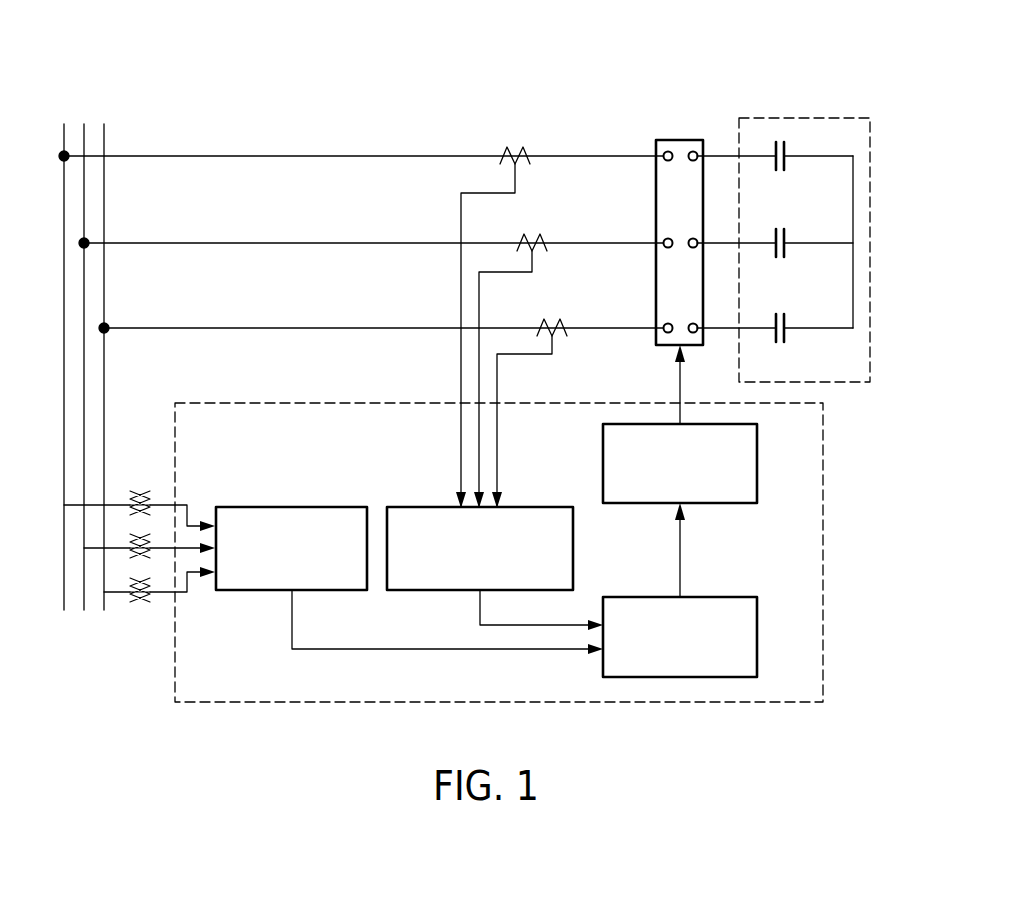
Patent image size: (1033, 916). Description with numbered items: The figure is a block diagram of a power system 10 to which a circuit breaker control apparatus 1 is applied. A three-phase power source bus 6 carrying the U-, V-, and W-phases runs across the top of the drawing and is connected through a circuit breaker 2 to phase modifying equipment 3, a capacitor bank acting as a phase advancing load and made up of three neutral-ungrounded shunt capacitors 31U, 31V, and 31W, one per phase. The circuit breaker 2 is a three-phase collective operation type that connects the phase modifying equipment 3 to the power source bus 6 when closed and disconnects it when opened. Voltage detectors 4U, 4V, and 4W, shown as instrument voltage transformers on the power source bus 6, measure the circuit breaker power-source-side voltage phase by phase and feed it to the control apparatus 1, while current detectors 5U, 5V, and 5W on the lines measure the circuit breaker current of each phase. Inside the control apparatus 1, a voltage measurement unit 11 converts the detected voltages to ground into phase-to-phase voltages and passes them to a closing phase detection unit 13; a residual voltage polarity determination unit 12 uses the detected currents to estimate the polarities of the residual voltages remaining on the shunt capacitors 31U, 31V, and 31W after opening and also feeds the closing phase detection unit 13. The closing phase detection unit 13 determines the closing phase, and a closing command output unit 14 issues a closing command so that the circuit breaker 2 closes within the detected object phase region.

The circuit breaker control apparatus 1 is at (824, 590).
The circuit breaker 2 is at (681, 139).
The phase modifying equipment 3 is at (804, 225).
The voltage detector 4U is at (148, 490).
The voltage detector 4V is at (130, 536).
The voltage detector 4W is at (139, 606).
The current detector 5U is at (517, 147).
The current detector 5V is at (534, 234).
The current detector 5W is at (553, 319).
The power source bus 6 is at (117, 93).
The power system 10 is at (827, 70).
The voltage measurement unit 11 is at (299, 506).
The residual voltage polarity determination unit 12 is at (404, 506).
The closing phase detection unit 13 is at (709, 596).
The closing command output unit 14 is at (758, 467).
The shunt capacitor 31U is at (786, 166).
The shunt capacitor 31V is at (786, 253).
The shunt capacitor 31W is at (786, 338).